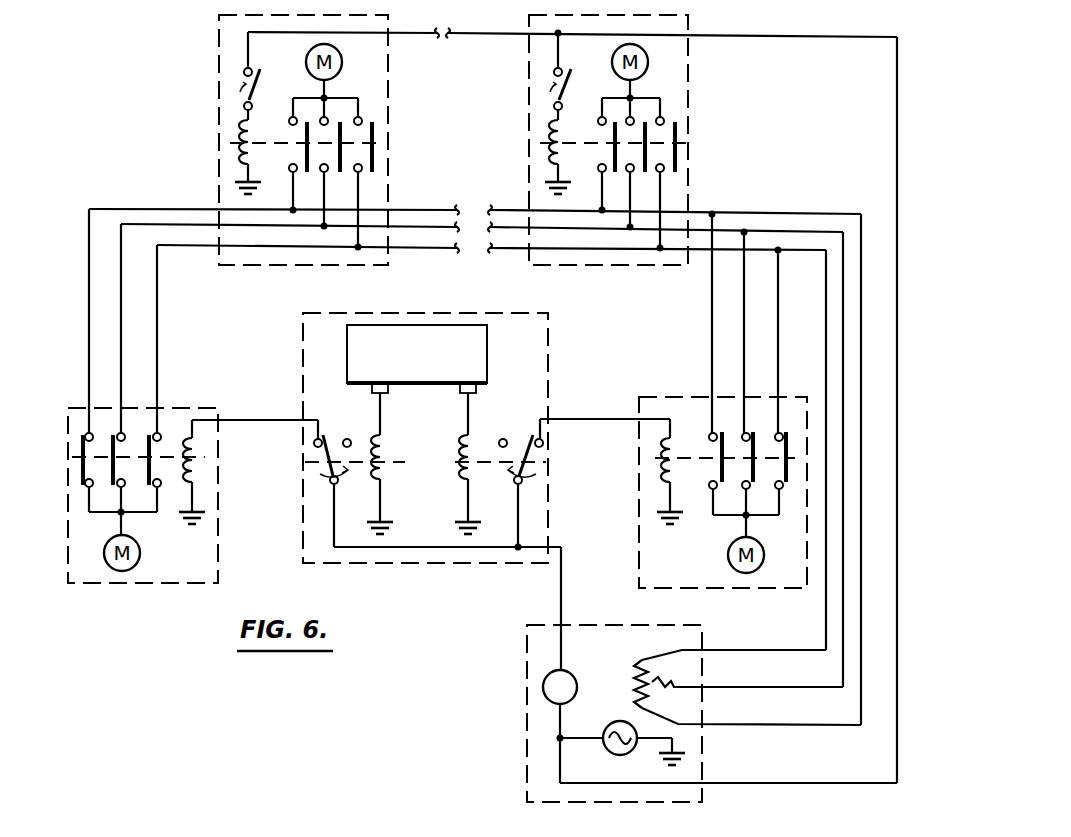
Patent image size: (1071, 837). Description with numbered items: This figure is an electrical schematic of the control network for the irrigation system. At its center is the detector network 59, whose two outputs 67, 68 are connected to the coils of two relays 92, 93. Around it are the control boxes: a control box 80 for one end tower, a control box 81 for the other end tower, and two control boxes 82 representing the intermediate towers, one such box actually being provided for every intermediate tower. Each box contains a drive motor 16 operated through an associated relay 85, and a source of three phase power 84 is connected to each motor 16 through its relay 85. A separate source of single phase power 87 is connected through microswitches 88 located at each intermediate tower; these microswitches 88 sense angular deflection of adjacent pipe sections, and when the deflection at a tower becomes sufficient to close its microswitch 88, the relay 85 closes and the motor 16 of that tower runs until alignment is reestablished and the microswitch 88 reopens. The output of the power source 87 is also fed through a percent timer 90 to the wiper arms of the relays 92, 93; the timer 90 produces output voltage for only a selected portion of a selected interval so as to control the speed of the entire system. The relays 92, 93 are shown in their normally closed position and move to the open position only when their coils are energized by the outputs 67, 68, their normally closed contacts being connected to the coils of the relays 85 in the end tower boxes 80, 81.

The motor 16 is at (342, 61).
The detector network 59 is at (487, 355).
The output 67 is at (380, 418).
The output 68 is at (470, 413).
The control box 80 is at (68, 502).
The control box 81 is at (639, 505).
The control box 82 is at (219, 155).
The source of three phase power 84 is at (644, 654).
The relay 85 is at (380, 113).
The source of single phase power 87 is at (616, 722).
The microswitch 88 is at (237, 80).
The percent timer 90 is at (543, 685).
The relay 92 is at (314, 462).
The relay 93 is at (545, 462).